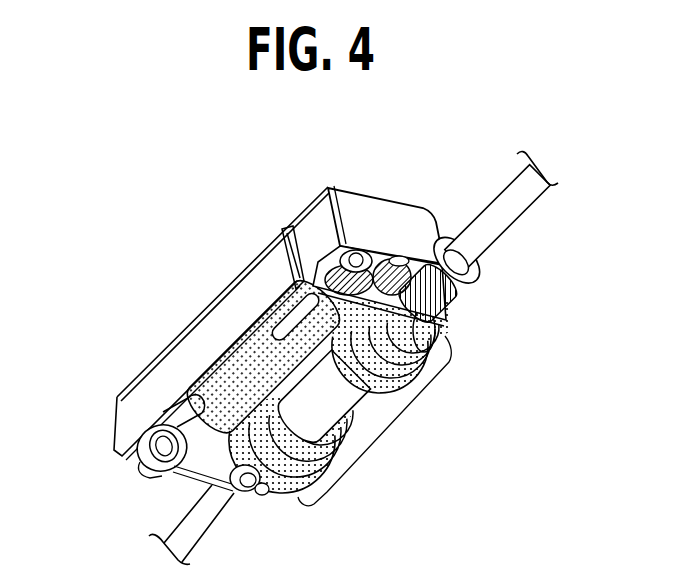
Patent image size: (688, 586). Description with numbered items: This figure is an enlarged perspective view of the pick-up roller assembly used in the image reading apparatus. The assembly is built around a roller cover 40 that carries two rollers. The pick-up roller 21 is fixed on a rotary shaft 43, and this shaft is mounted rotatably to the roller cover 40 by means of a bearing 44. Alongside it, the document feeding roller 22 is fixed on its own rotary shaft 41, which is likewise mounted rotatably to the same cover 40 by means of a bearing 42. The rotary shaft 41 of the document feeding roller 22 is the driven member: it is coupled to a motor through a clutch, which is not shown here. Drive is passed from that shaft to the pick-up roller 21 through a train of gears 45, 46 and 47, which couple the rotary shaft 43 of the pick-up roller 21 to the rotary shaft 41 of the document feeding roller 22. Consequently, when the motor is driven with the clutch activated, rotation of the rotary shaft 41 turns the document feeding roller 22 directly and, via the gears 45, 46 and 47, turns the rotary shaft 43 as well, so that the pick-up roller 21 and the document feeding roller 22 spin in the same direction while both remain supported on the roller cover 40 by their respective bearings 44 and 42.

The pick-up roller 21 is at (232, 372).
The document feeding roller 22 is at (372, 454).
The roller cover 40 is at (150, 397).
The rotary shaft 41 is at (493, 211).
The bearing 42 is at (263, 499).
The rotary shaft 43 is at (297, 285).
The bearing 44 is at (311, 275).
The gear 45 is at (460, 292).
The gear 46 is at (378, 252).
The gear 47 is at (336, 190).